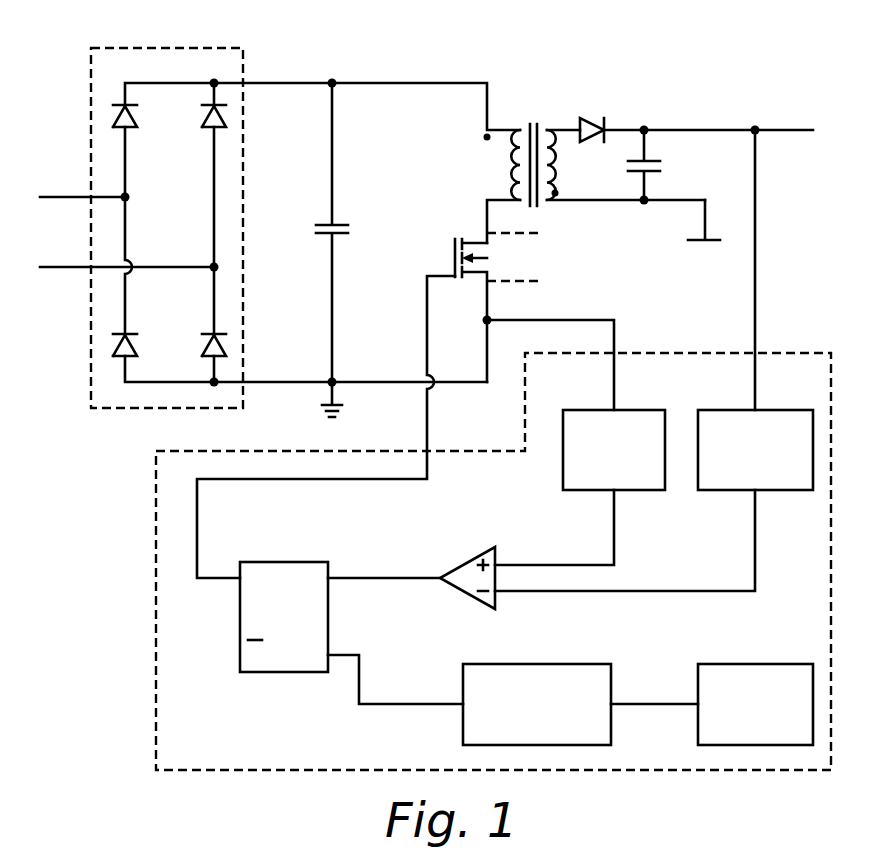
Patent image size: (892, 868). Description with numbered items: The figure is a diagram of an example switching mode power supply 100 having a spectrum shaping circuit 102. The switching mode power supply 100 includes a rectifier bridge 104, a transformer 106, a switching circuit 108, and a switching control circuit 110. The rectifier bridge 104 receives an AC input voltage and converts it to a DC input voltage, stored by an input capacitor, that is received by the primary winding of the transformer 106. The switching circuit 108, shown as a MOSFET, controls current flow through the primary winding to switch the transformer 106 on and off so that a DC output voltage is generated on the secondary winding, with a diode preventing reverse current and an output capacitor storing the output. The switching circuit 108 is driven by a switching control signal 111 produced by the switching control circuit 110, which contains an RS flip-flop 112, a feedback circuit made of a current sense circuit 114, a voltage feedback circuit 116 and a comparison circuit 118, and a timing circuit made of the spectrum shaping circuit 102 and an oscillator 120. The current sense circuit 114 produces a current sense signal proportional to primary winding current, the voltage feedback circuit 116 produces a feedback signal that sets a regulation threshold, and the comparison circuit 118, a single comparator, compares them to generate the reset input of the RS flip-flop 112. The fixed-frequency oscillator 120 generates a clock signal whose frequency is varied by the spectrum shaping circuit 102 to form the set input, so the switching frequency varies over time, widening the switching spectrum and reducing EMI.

The switching mode power supply 100 is at (697, 74).
The spectrum shaping circuit 102 is at (757, 664).
The rectifier bridge 104 is at (197, 47).
The transformer 106 is at (547, 124).
The switching circuit 108 is at (456, 232).
The switching control circuit 110 is at (673, 353).
The switching control signal 111 is at (427, 343).
The RS flip-flop 112 is at (288, 672).
The current sense circuit 114 is at (596, 410).
The voltage feedback circuit 116 is at (722, 410).
The comparison circuit 118 is at (475, 557).
The oscillator 120 is at (537, 664).